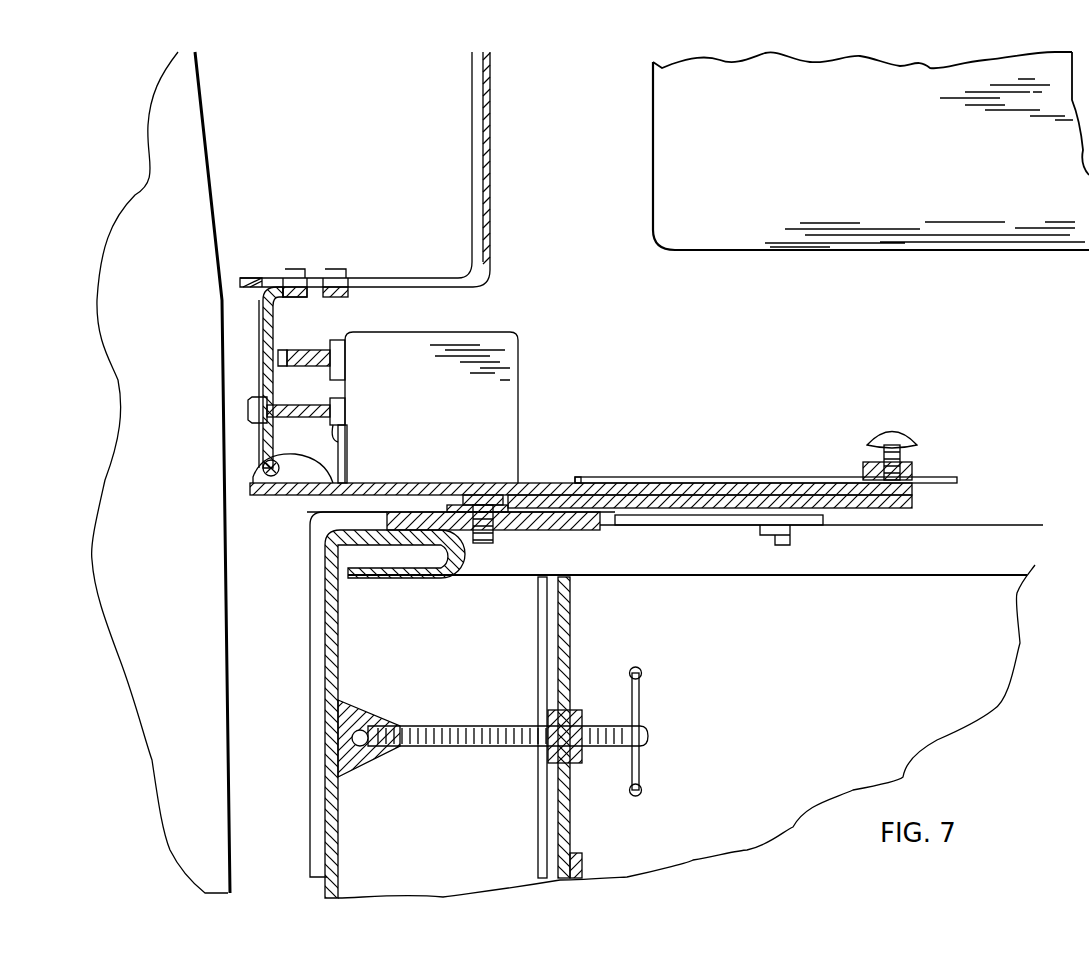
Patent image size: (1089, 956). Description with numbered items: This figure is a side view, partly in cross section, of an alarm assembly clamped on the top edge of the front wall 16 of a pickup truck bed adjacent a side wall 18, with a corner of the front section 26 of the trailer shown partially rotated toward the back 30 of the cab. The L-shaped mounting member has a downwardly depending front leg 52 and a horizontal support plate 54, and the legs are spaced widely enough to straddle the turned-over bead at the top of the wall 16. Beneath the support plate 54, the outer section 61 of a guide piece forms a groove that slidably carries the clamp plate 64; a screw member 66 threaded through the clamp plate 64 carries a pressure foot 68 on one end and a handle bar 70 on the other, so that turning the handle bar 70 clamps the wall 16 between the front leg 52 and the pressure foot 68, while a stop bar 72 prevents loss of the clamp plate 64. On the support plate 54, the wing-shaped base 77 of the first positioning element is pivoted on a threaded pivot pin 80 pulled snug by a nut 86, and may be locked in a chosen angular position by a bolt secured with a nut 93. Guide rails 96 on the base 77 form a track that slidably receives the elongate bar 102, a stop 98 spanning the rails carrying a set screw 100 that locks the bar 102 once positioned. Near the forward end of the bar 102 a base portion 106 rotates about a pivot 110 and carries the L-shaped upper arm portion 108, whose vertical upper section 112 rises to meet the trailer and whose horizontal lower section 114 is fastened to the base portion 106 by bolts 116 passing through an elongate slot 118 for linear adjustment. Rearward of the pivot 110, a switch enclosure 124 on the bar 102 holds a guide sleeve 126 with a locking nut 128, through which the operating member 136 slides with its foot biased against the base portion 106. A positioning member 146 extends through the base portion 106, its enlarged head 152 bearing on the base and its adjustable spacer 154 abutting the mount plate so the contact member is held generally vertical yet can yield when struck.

The front wall 16 is at (675, 705).
The side wall 18 is at (855, 640).
The front section 26 is at (768, 216).
The back 30 is at (160, 562).
The front leg 52 is at (310, 752).
The support plate 54 is at (580, 520).
The outer section 61 is at (551, 727).
The clamp plate 64 is at (550, 713).
The screw member 66 is at (513, 737).
The pressure foot 68 is at (360, 748).
The handle bar 70 is at (642, 700).
The stop bar 72 is at (578, 864).
The base 77 is at (663, 492).
The pivot pin 80 is at (510, 548).
The nut 86 is at (476, 558).
The nut 93 is at (792, 538).
The guide rails 96 is at (750, 478).
The stop 98 is at (905, 475).
The set screw 100 is at (918, 443).
The bar 102 is at (603, 466).
The base portion 106 is at (268, 312).
The upper arm portion 108 is at (397, 184).
The pivot 110 is at (264, 470).
The upper section 112 is at (493, 138).
The lower section 114 is at (473, 285).
The bolts 116 is at (336, 270).
The slot 118 is at (396, 276).
The switch enclosure 124 is at (425, 407).
The guide sleeve 126 is at (346, 338).
The locking nut 128 is at (340, 360).
The operating member 136 is at (285, 356).
The positioning member 146 is at (250, 398).
The head 152 is at (250, 405).
The spacer 154 is at (343, 440).